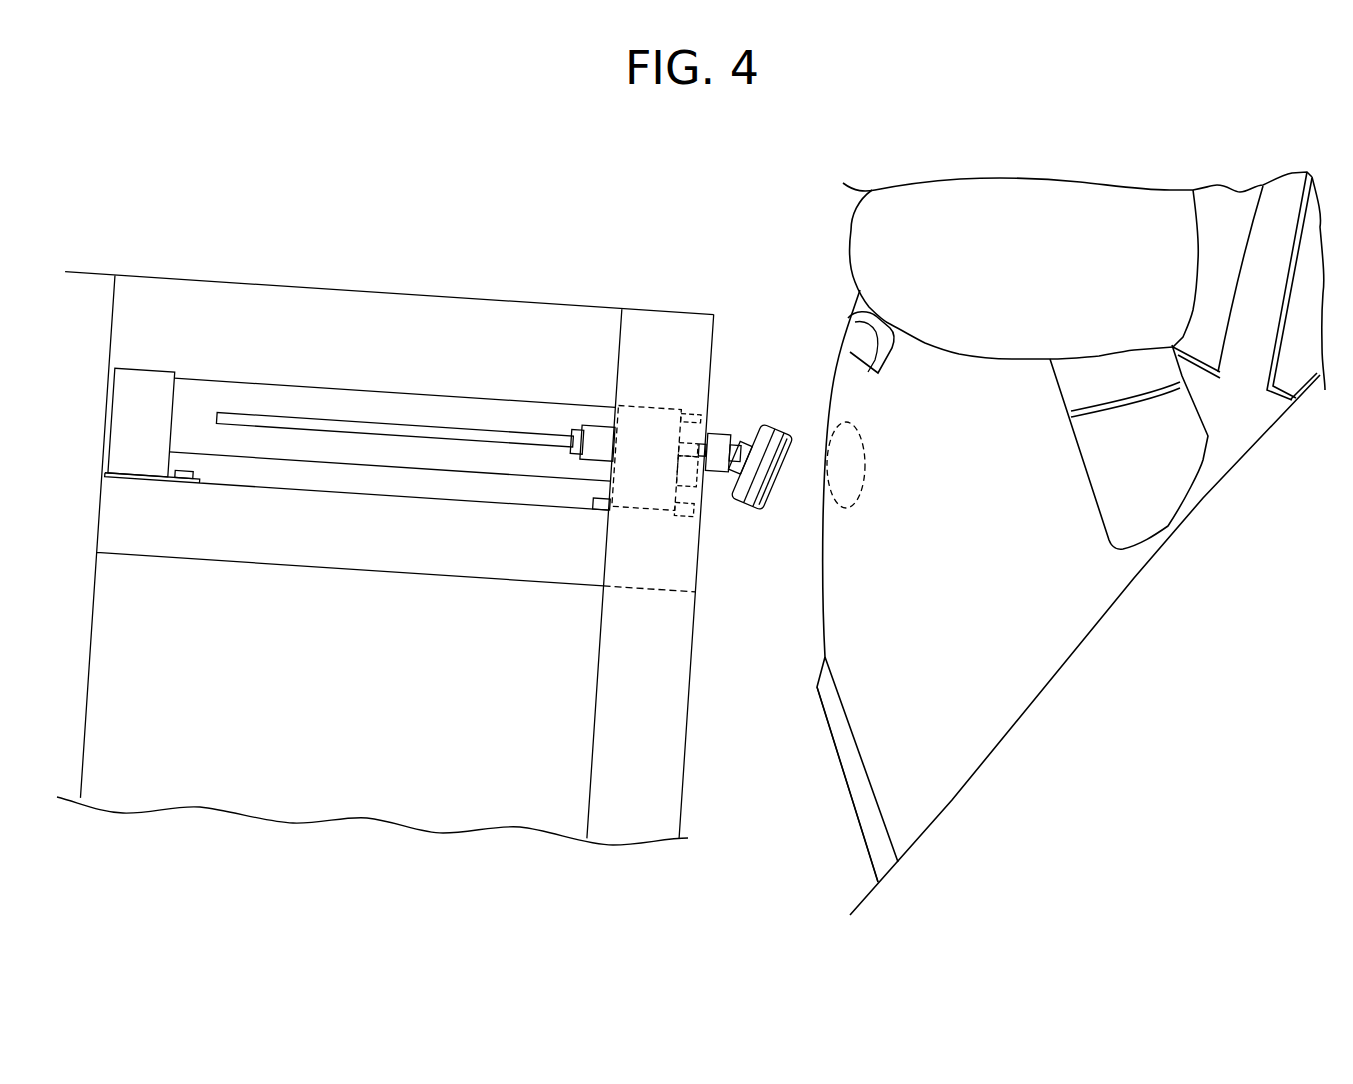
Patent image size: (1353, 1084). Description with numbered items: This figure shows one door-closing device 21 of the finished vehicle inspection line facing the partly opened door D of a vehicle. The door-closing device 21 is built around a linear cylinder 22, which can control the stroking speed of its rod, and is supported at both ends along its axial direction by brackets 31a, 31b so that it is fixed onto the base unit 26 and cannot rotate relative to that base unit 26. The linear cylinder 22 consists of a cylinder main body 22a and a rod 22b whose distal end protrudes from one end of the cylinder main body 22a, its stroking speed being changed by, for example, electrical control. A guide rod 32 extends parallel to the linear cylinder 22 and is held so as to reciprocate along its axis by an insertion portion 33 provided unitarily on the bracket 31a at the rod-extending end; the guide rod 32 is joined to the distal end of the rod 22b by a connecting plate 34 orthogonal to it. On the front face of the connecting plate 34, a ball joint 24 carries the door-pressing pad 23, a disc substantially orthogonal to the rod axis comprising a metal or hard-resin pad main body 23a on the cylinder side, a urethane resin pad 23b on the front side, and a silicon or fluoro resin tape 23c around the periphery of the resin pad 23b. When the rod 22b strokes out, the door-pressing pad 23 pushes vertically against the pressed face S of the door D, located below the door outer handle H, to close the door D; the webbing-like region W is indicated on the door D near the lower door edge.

The door-closing device 21 is at (361, 326).
The linear cylinder 22 is at (429, 384).
The cylinder main body 22a is at (480, 413).
The rod 22b is at (698, 423).
The door-pressing pad 23 is at (766, 523).
The pad main body 23a is at (767, 430).
The resin pad 23b is at (785, 436).
The silicon or fluoro resin tape 23c is at (775, 480).
The ball joint 24 is at (741, 427).
The base unit 26 is at (202, 272).
The bracket 31a is at (652, 418).
The bracket 31b is at (278, 386).
The guide rod 32 is at (535, 437).
The insertion portion 33 is at (598, 433).
The connecting plate 34 is at (712, 432).
The door outer handle H is at (858, 331).
The pressed face S is at (848, 464).
The door D is at (868, 745).
The webbing W is at (973, 803).